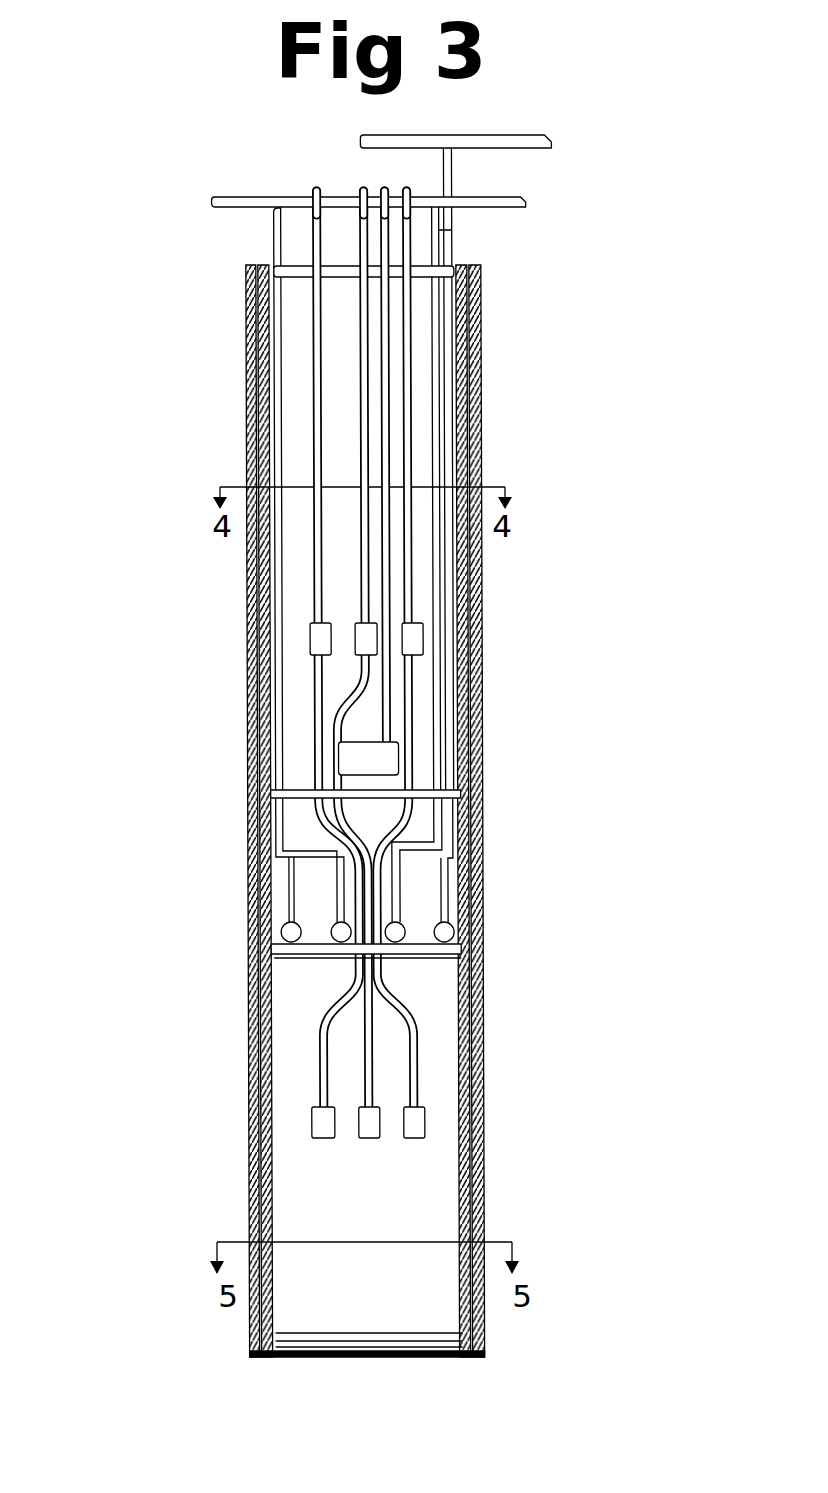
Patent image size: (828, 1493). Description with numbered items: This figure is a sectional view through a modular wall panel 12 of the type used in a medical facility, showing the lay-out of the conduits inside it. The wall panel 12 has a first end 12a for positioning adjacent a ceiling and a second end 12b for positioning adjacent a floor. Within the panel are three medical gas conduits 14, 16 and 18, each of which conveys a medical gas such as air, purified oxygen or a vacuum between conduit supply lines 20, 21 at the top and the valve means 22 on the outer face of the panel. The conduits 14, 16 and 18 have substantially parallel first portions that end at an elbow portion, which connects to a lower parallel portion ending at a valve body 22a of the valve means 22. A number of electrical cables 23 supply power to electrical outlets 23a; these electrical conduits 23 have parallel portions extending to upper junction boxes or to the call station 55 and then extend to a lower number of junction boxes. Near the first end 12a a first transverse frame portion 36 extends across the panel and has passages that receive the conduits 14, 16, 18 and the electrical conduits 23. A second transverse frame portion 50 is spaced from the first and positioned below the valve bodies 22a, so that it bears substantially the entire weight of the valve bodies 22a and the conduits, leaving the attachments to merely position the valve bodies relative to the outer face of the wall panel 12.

The wall panel 12 is at (146, 467).
The first end 12a is at (164, 243).
The second end 12b is at (164, 1330).
The medical gas conduit 14 is at (276, 229).
The medical gas conduit 16 is at (441, 229).
The medical gas conduit 18 is at (456, 256).
The conduit supply line 20 is at (527, 204).
The conduit supply line 21 is at (553, 140).
The valve means 22 is at (310, 908).
The valve body 22a is at (445, 930).
The electrical cable 23 is at (316, 186).
The electrical outlet 23a is at (415, 1118).
The first transverse frame portion 36 is at (307, 270).
The second transverse frame portion 50 is at (405, 955).
The call station 55 is at (365, 757).